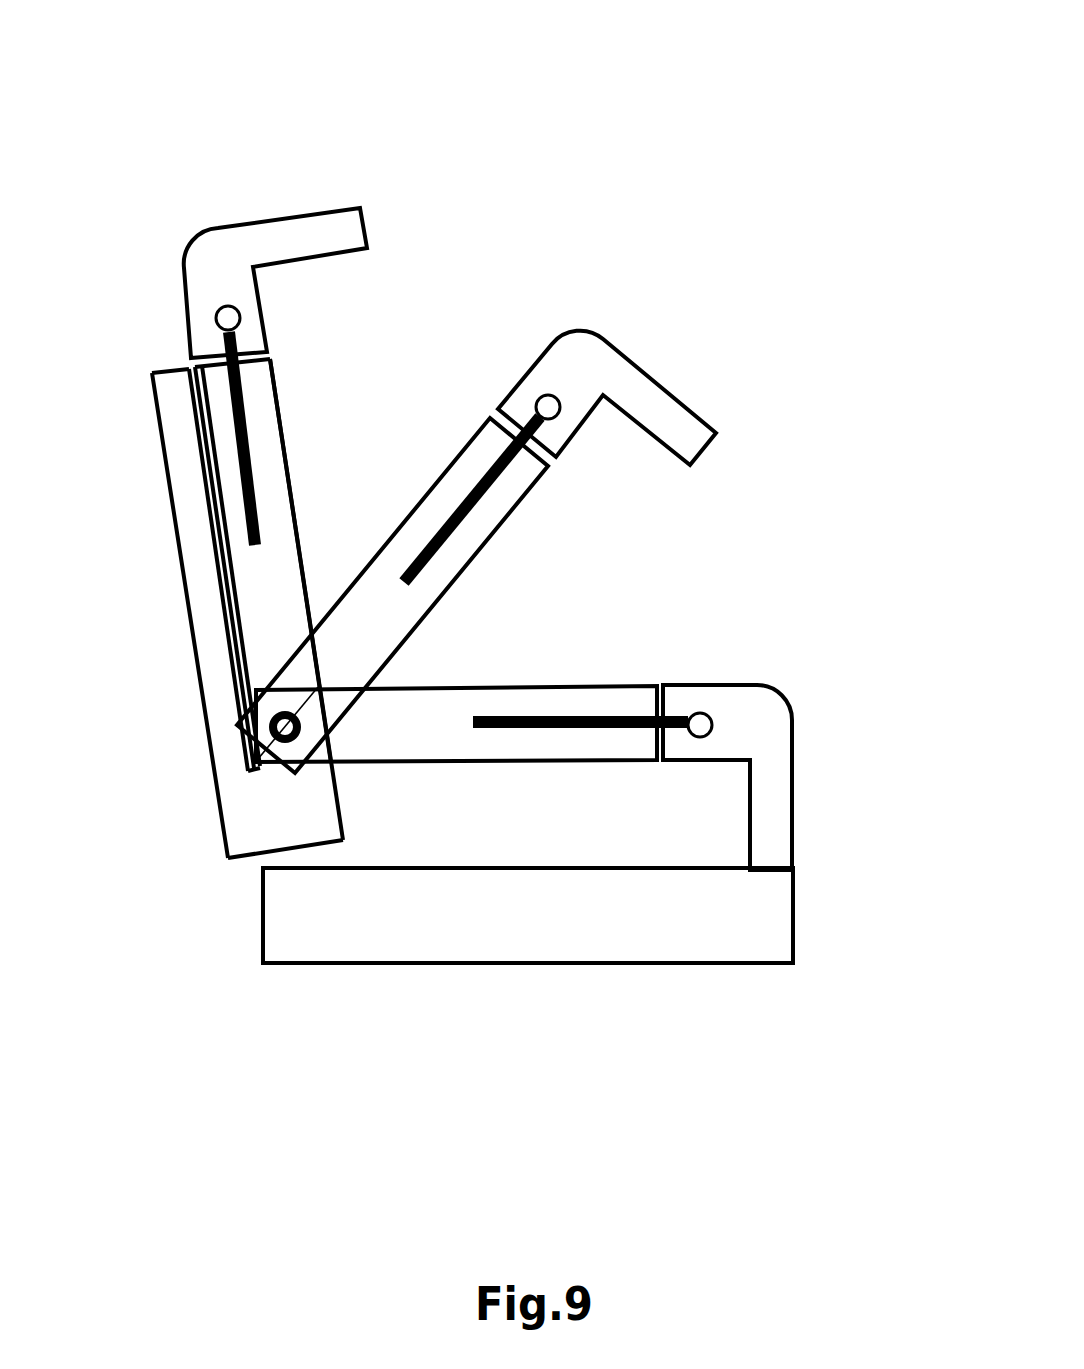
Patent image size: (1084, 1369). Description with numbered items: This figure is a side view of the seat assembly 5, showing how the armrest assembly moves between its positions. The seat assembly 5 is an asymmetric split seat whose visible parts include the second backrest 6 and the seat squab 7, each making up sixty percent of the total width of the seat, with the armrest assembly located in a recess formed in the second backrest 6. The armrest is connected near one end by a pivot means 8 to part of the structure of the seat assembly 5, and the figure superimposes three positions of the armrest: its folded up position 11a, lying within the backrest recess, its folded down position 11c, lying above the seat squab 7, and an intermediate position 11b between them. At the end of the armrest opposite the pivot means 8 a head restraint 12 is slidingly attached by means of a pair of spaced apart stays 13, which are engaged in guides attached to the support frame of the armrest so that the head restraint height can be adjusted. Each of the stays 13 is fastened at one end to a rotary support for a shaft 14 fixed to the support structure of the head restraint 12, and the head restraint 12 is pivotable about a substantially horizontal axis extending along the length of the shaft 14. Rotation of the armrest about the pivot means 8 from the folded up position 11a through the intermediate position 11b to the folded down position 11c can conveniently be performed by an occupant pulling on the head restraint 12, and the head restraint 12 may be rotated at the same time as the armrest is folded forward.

The seat assembly 5 is at (758, 133).
The second backrest 6 is at (184, 576).
The seat squab 7 is at (263, 922).
The pivot means 8 is at (268, 731).
The armrest folded up position 11a is at (268, 383).
The armrest intermediate position 11b is at (457, 455).
The armrest folded down position 11c is at (430, 686).
The head restraint 12 is at (210, 230).
The stays 13 is at (447, 512).
The shaft 14 is at (214, 315).